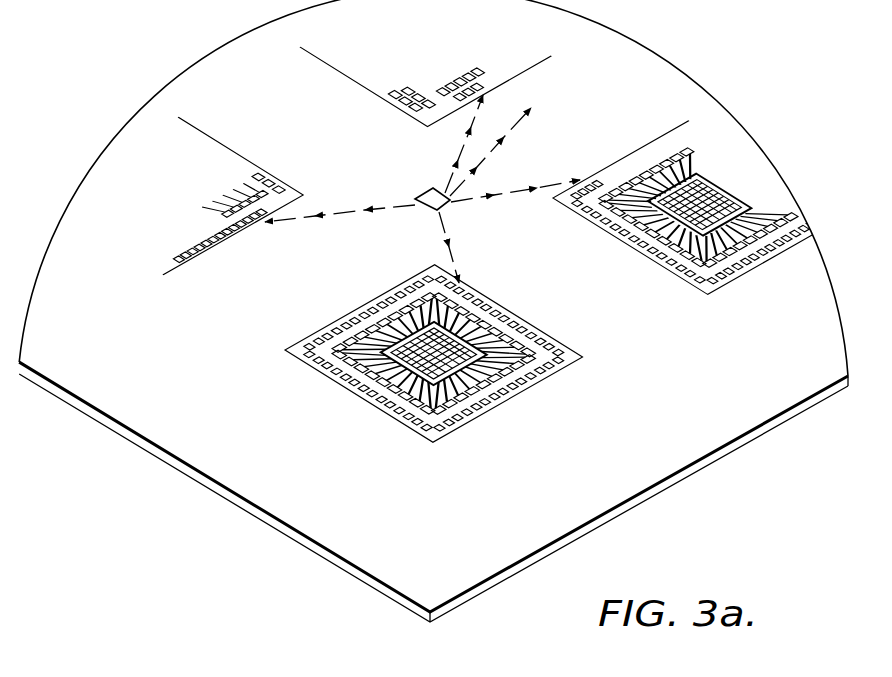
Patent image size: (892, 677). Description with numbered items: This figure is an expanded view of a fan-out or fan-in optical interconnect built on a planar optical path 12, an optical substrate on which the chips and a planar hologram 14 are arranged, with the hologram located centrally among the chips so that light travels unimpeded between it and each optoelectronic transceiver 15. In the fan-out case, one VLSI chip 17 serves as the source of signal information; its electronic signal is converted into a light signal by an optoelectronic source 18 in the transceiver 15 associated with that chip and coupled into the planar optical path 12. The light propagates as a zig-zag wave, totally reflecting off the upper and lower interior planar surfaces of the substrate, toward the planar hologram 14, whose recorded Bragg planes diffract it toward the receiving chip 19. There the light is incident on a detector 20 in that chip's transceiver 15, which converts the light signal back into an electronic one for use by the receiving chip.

The planar optical path 12 is at (235, 472).
The planar hologram 14 is at (428, 194).
The optoelectronic transceiver 15 is at (525, 323).
The VLSI chip 17 is at (392, 376).
The optoelectronic source 18 is at (455, 293).
The receiving chip 19 is at (708, 200).
The detector 20 is at (590, 178).